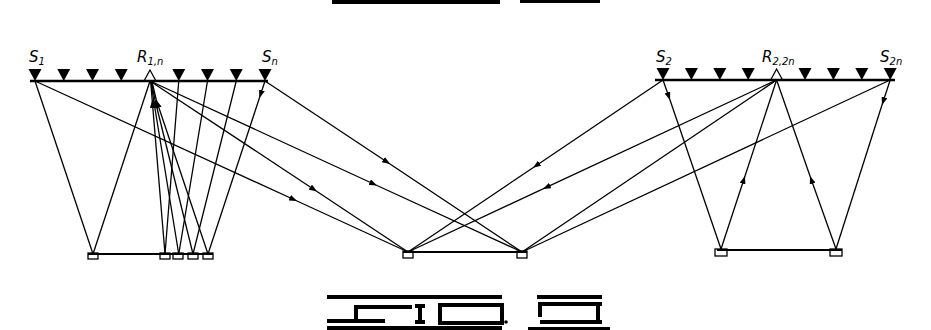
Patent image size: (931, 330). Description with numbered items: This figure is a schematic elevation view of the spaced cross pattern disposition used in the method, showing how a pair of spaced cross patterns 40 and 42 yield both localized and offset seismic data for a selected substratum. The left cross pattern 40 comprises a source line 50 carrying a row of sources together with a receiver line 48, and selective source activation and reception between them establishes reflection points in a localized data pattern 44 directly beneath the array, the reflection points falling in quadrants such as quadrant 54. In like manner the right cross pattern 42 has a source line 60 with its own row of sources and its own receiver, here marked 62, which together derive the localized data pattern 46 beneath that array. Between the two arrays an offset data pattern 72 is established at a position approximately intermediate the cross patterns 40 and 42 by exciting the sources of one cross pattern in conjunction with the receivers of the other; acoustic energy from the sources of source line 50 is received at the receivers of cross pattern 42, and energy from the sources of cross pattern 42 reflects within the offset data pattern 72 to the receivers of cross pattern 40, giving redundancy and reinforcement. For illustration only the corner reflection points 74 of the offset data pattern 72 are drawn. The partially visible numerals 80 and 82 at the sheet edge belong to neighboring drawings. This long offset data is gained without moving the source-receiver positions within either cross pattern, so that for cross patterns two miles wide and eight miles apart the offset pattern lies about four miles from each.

The cross pattern 40 is at (209, 51).
The cross pattern 42 is at (804, 39).
The localized data pattern 44 is at (213, 254).
The localized data pattern 46 is at (837, 257).
The receiver line 48 is at (141, 87).
The source line 50 is at (77, 81).
The quadrant 54 is at (196, 266).
The source line 60 is at (705, 80).
The receiver R2,2n of second array 62 is at (791, 84).
The offset data pattern 72 is at (468, 256).
The corner reflection points 74 is at (405, 258).
The element of adjacent figure (partial) 80 is at (261, 324).
The element of adjacent figure (partial) 82 is at (856, 329).